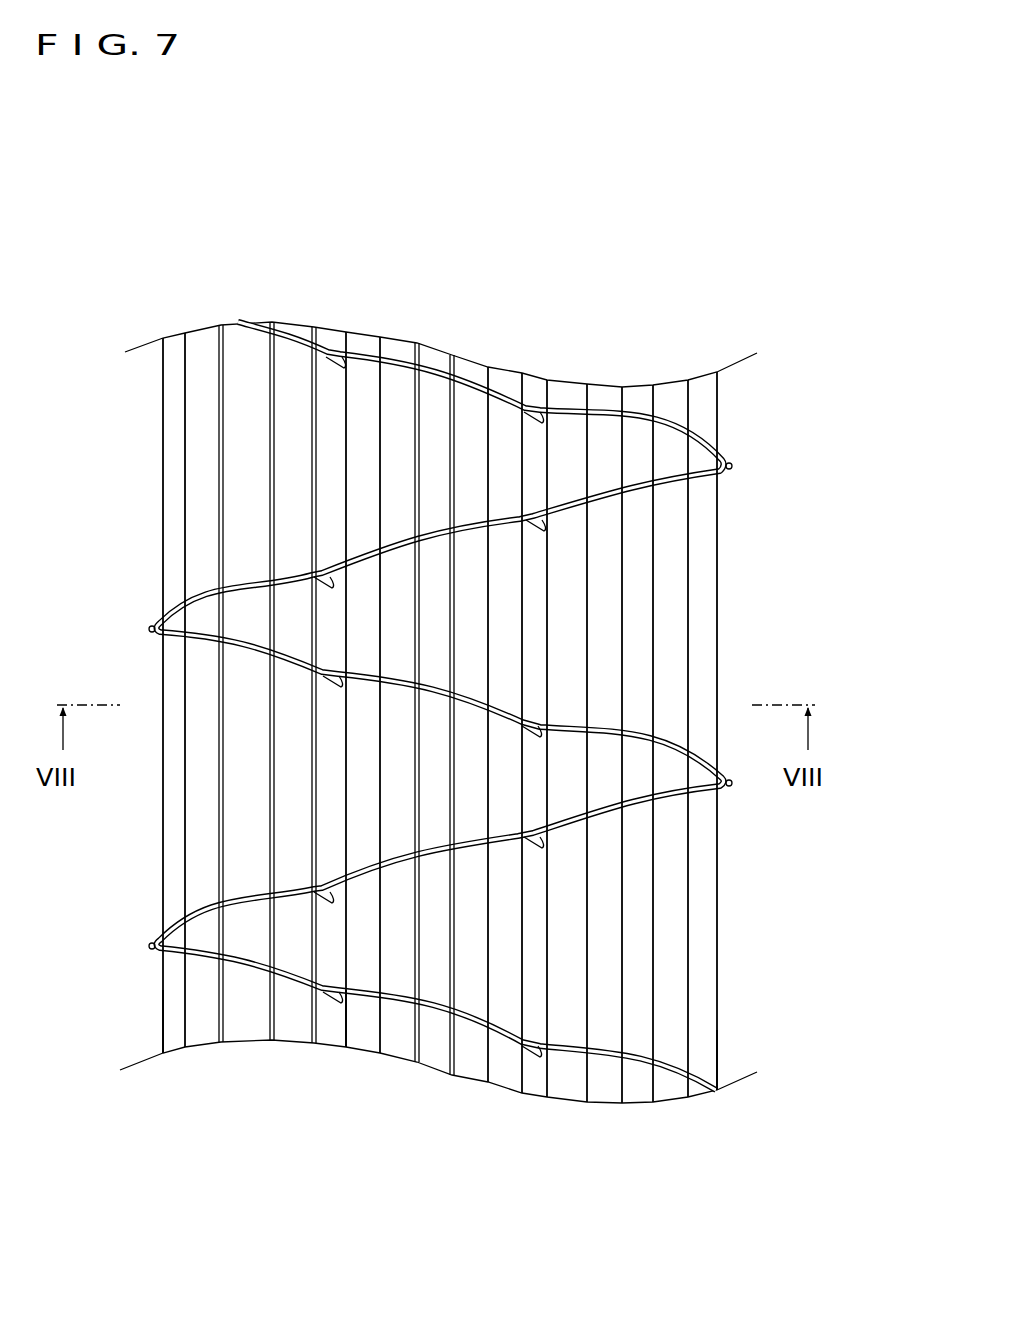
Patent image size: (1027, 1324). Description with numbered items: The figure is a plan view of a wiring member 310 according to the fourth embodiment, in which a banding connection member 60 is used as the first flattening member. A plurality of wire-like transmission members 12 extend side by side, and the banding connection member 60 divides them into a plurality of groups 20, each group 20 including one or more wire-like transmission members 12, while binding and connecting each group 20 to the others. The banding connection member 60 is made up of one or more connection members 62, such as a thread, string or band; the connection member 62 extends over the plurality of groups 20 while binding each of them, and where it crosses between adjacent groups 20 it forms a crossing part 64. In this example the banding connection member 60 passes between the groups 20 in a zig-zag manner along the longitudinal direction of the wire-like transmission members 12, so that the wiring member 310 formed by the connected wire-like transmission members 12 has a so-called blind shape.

The wiring member 310 is at (164, 170).
The wire-like transmission member 12 is at (232, 1033).
The group 20 is at (158, 1027).
The banding connection member 60 is at (397, 706).
The connection member 62 is at (177, 605).
The crossing part 64 is at (538, 400).